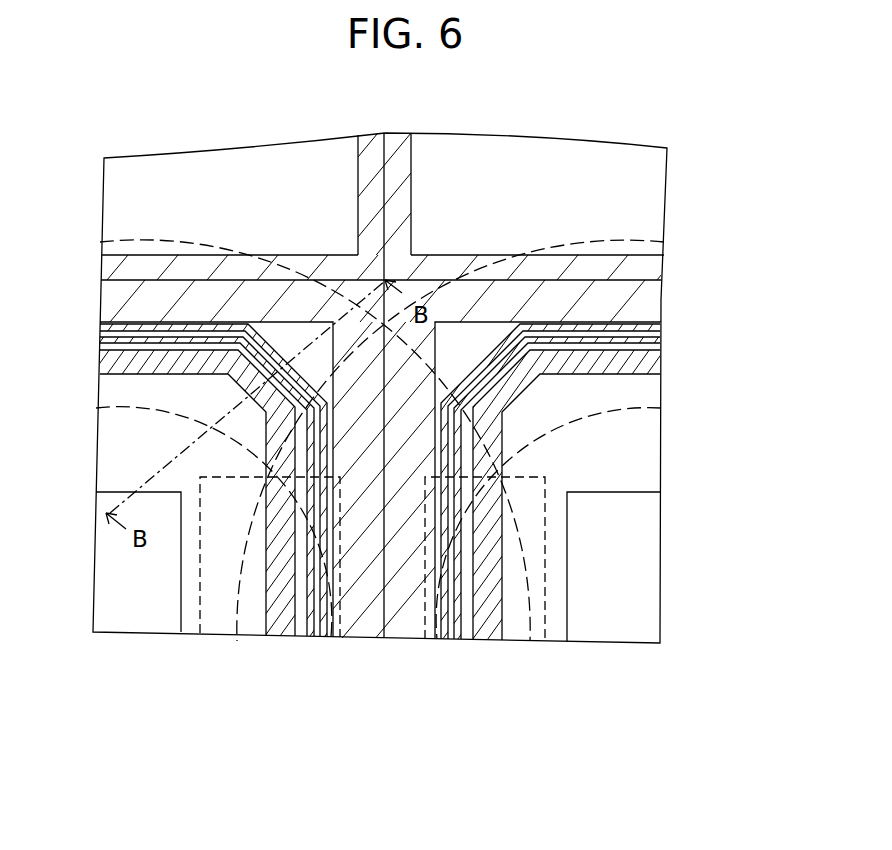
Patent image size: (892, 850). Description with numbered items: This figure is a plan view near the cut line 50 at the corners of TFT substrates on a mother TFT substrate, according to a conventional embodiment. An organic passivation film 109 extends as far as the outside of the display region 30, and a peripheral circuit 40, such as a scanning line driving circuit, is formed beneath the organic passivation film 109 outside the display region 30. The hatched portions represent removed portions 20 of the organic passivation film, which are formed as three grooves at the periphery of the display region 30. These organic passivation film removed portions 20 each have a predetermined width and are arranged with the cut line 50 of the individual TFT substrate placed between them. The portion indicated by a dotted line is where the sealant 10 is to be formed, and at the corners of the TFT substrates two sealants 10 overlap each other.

The sealant 10 is at (103, 243).
The organic passivation film removed portions 20 is at (636, 304).
The cut line 50 is at (638, 266).
The display region 30 is at (140, 567).
The peripheral circuit 40 is at (213, 620).
The organic passivation film 109 is at (140, 446).